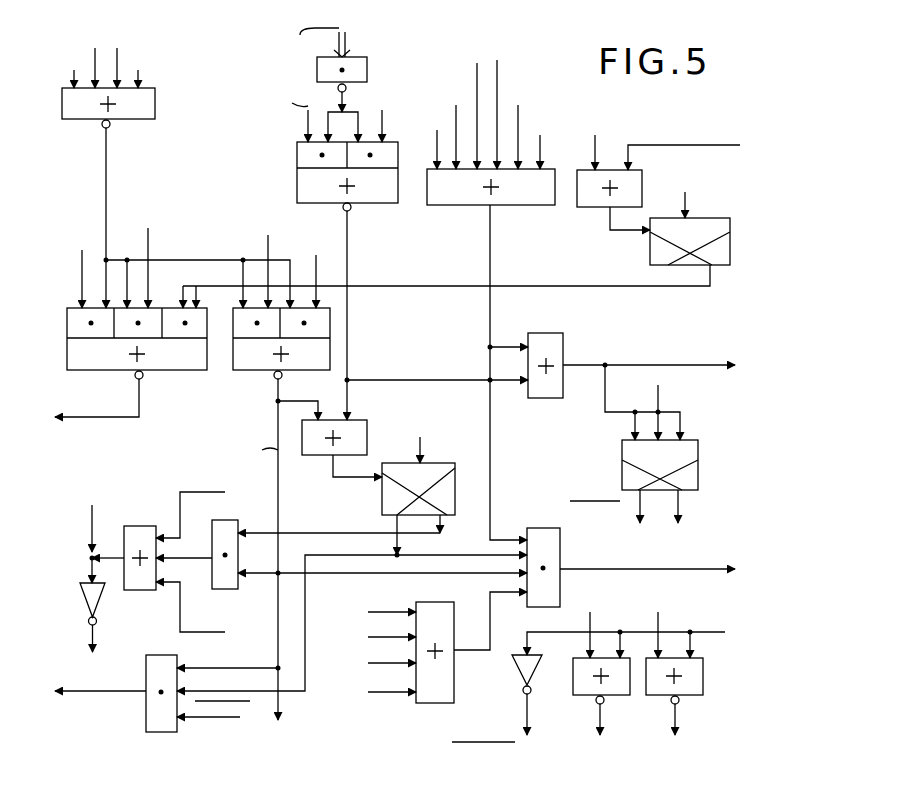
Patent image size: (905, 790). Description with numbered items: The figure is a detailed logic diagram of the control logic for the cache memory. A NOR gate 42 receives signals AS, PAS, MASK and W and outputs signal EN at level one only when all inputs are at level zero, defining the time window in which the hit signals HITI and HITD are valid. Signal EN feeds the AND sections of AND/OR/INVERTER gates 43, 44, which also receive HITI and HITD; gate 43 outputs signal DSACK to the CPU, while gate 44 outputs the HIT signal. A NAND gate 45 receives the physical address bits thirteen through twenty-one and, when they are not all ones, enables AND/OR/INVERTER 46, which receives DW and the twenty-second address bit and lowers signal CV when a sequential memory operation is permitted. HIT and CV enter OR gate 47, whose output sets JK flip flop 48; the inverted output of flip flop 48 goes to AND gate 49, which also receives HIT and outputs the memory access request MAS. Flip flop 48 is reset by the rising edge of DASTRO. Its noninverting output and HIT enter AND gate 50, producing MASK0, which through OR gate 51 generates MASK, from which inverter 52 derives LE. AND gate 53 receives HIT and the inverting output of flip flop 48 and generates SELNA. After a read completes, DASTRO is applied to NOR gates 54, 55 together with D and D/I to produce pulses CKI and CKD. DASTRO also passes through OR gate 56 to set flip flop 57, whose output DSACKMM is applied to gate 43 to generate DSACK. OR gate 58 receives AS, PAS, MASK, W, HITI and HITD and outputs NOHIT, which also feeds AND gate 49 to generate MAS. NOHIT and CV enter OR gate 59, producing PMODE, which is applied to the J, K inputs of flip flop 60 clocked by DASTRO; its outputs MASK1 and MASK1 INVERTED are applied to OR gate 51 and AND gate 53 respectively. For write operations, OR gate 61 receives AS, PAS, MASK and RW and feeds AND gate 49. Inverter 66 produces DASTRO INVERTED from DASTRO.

The NOR gate 42 is at (156, 106).
The AND/OR/INVERTER gate 43 is at (183, 371).
The AND/OR/INVERTER gate 44 is at (258, 371).
The NAND gate 45 is at (368, 65).
The AND/OR/INVERTER gate 46 is at (297, 160).
The OR gate 47 is at (367, 420).
The JK flip flop 48 is at (382, 500).
The AND gate 49 is at (540, 528).
The AND gate 50 is at (232, 522).
The OR gate 51 is at (132, 526).
The inverter 52 is at (82, 600).
The AND gate 53 is at (157, 733).
The NOR gate 54 is at (573, 678).
The NOR gate 55 is at (703, 678).
The OR gate 56 is at (595, 208).
The flip flop 57 is at (650, 255).
The OR gate 58 is at (460, 206).
The OR gate 59 is at (545, 333).
The flip flop 60 is at (622, 455).
The OR gate 61 is at (454, 672).
The inverter 66 is at (522, 700).